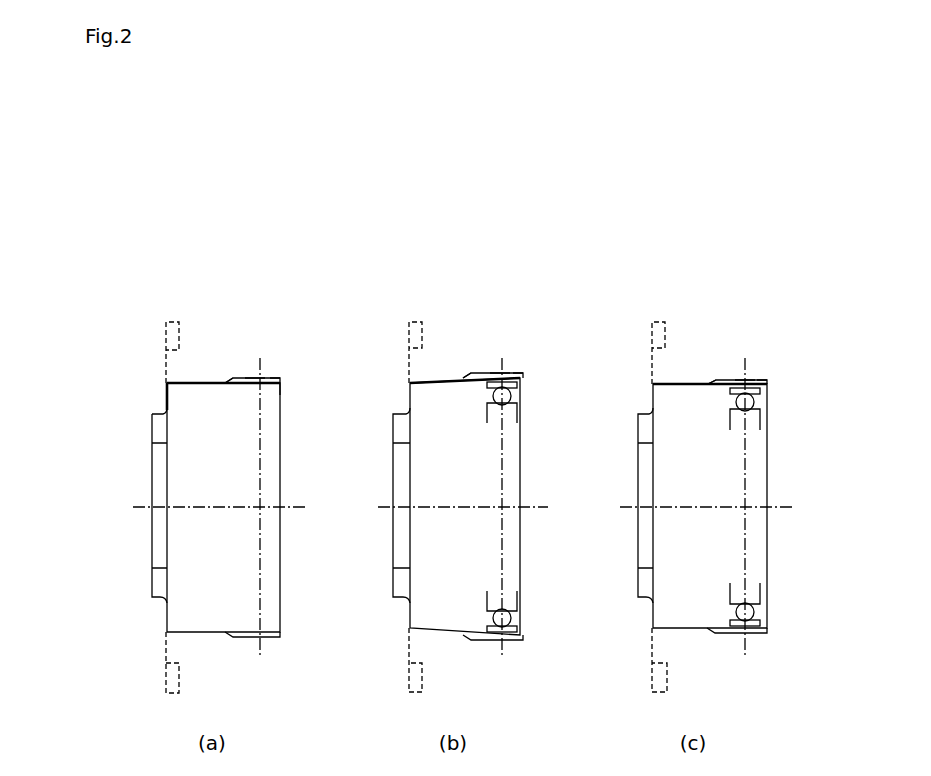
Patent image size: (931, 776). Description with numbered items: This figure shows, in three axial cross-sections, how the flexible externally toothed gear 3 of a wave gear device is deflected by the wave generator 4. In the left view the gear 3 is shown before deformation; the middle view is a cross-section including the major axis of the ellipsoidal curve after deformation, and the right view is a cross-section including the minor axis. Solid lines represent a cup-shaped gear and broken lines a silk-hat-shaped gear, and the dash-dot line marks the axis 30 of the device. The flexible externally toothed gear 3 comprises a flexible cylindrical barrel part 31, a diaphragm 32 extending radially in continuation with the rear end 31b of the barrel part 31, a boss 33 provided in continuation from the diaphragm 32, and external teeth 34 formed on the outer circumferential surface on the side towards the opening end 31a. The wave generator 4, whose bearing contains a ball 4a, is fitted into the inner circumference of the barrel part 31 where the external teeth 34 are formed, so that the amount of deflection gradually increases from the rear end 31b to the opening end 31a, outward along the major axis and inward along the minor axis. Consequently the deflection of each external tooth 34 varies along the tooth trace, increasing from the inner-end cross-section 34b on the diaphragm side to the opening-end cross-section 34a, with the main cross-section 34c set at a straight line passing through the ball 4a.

The flexible externally toothed gear 3 is at (192, 308).
The central axis 30 is at (262, 452).
The cylindrical barrel part 31 is at (198, 385).
The opening end 31a is at (280, 382).
The rear end 31b is at (165, 392).
The diaphragm 32 is at (163, 403).
The boss 33 is at (157, 432).
The external teeth 34 is at (265, 374).
The opening-end cross-section 34a is at (277, 378).
The inner-end cross-section 34b is at (233, 378).
The main cross-section 34c is at (253, 377).
The wave generator 4 is at (522, 416).
The ball 4a is at (508, 392).